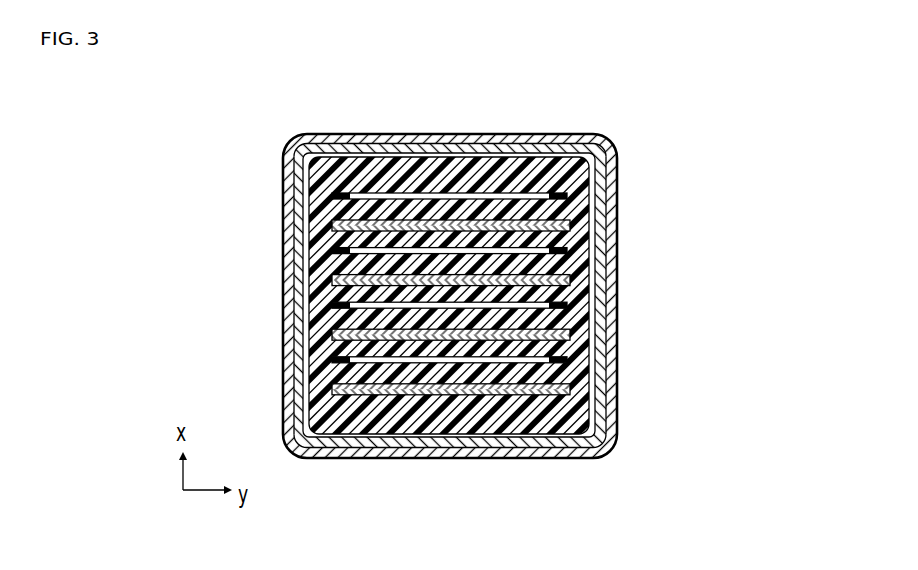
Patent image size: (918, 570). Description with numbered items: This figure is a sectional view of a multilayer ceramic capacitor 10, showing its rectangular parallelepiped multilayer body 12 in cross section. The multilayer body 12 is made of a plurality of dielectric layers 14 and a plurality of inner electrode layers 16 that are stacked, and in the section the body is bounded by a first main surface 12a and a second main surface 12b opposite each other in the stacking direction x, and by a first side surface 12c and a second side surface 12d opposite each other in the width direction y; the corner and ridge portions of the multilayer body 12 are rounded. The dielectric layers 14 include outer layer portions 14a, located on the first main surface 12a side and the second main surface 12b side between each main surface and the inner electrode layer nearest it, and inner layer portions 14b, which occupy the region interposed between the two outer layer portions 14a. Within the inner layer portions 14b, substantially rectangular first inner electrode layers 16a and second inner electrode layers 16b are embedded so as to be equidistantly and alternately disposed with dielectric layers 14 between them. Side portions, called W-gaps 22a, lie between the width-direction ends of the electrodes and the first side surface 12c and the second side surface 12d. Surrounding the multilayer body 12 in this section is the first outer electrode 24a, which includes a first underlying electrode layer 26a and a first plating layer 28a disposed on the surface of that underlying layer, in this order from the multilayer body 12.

The multilayer ceramic capacitor 10 is at (216, 120).
The multilayer body 12 is at (487, 283).
The first main surface 12a is at (360, 152).
The second main surface 12b is at (360, 440).
The first side surface 12c is at (304, 291).
The second side surface 12d is at (596, 303).
The dielectric layers 14 is at (460, 298).
The outer layer portions 14a is at (408, 178).
The inner layer portions 14b is at (481, 240).
The inner electrode layers 16 is at (501, 323).
The first inner electrode layers 16a is at (336, 251).
The second inner electrode layers 16b is at (560, 280).
The side portions (W-gaps) 22a is at (331, 197).
The first outer electrode 24a is at (517, 296).
The first underlying electrode layer 26a is at (600, 188).
The first plating layer 28a is at (612, 214).